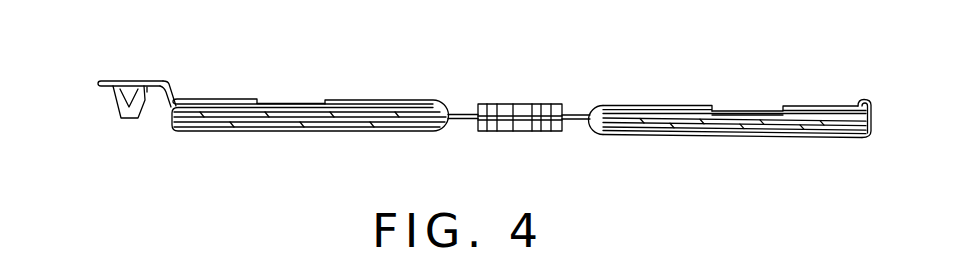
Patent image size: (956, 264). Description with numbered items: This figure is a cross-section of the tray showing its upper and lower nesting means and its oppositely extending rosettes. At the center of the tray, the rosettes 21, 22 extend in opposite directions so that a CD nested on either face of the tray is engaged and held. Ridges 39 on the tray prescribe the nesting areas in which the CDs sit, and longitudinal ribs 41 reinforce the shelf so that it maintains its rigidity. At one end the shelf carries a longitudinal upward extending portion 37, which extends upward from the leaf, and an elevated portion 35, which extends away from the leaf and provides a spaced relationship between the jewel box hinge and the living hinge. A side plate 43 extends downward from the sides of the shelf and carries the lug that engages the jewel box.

The rosette 21 is at (533, 104).
The rosette 22 is at (546, 132).
The elevated portion 35 is at (118, 80).
The longitudinal upward extending portion 37 is at (172, 87).
The ridges 39 is at (360, 98).
The longitudinal ribs 41 is at (159, 87).
The side plate 43 is at (122, 118).